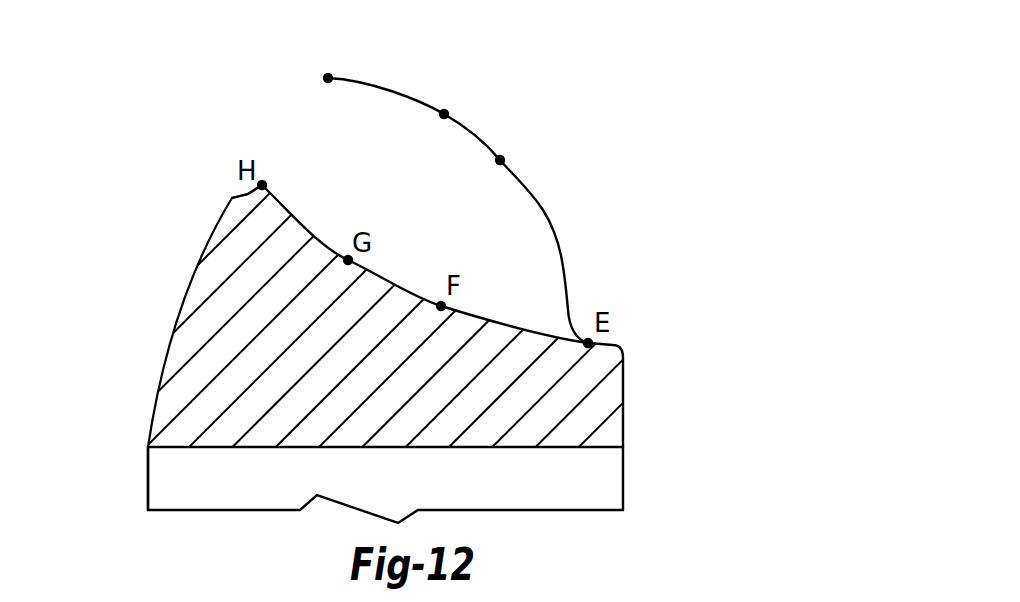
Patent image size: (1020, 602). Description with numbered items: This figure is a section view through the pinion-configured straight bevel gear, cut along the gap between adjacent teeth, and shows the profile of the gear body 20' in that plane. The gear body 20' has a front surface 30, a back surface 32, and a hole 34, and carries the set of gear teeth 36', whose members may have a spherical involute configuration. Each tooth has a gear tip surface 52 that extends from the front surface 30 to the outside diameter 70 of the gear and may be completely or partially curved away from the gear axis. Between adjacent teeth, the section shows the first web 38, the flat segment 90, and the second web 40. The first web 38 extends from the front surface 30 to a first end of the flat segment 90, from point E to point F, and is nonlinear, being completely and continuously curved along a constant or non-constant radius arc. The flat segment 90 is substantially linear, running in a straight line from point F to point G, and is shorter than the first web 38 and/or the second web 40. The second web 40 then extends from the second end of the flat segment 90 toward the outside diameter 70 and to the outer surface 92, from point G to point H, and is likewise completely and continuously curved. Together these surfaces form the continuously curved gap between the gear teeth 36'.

The gear body 20' is at (357, 316).
The outer surface 92 is at (246, 193).
The second web 40 is at (303, 223).
The flat segment 90 is at (392, 280).
The first web 38 is at (507, 327).
The front surface 30 is at (627, 400).
The gear tip surface 52 is at (393, 88).
The outside diameter 70 is at (330, 64).
The set of gear teeth 36' is at (393, 142).
The hole 34 is at (590, 477).
The back surface 32 is at (148, 476).